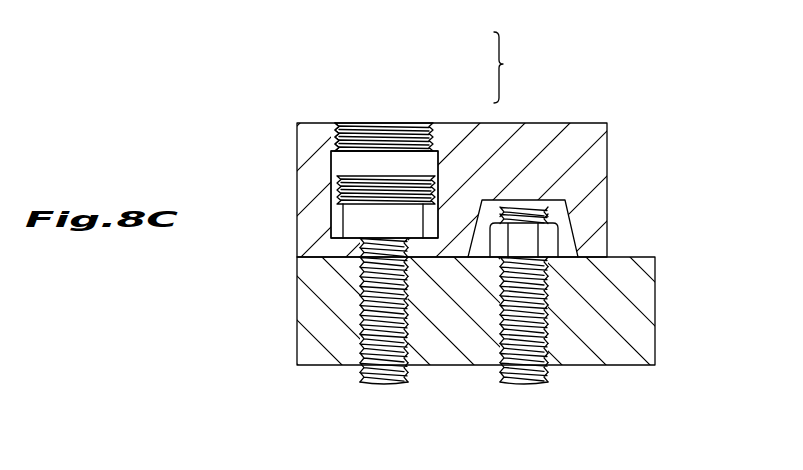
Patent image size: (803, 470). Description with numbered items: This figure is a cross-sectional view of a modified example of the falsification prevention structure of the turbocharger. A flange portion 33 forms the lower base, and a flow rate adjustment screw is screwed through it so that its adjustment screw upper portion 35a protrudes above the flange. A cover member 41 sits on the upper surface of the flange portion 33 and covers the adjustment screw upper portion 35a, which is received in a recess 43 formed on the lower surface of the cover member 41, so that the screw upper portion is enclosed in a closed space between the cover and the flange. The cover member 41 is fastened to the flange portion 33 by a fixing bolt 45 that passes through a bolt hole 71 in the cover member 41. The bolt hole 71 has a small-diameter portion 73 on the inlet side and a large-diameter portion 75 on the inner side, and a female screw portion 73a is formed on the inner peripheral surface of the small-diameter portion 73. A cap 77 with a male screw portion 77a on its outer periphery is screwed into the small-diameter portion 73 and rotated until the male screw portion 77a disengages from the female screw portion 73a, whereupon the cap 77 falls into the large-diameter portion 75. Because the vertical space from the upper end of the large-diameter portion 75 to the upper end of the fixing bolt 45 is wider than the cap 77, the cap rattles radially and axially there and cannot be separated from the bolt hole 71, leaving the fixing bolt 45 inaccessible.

The flange portion 33 is at (632, 343).
The adjustment screw upper portion 35a is at (568, 198).
The cover member 41 is at (533, 143).
The recess 43 is at (577, 239).
The fixing bolt 45 is at (360, 227).
The bolt hole 71 is at (515, 67).
The small-diameter portion 73 is at (418, 122).
The female screw portion 73a is at (363, 123).
The large-diameter portion 75 is at (440, 153).
The cap 77 is at (383, 170).
The male screw portion 77a is at (337, 192).